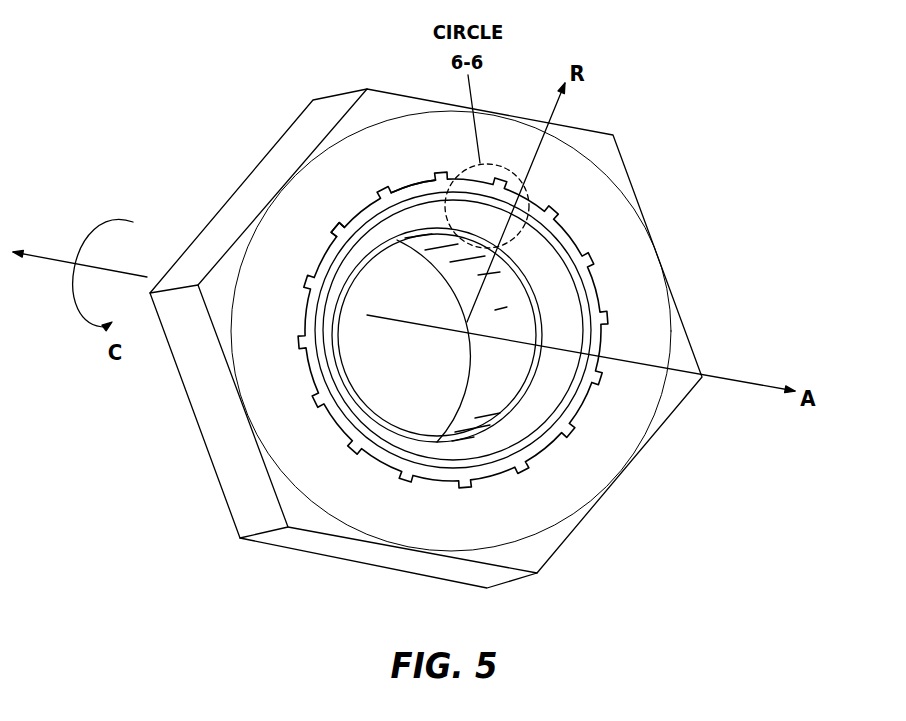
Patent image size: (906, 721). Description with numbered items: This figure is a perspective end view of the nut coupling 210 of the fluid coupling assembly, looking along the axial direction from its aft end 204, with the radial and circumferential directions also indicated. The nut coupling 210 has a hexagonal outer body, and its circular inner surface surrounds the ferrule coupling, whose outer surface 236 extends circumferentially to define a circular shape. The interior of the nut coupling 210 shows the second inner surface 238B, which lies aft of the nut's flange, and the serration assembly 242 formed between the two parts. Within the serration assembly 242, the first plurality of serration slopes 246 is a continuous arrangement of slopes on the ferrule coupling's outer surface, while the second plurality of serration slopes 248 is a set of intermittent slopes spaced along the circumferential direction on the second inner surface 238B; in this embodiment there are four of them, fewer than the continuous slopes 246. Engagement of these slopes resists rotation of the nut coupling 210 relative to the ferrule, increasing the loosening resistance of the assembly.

The nut coupling 210 is at (600, 162).
The serration assembly 242 is at (587, 228).
The first plurality of serration slopes 246 is at (582, 258).
The outer surface of the ferrule coupling 236 is at (343, 220).
The second inner surface of the nut coupling 238B is at (405, 215).
The second plurality of serration slopes 248 is at (467, 322).
The aft end 204 is at (523, 418).